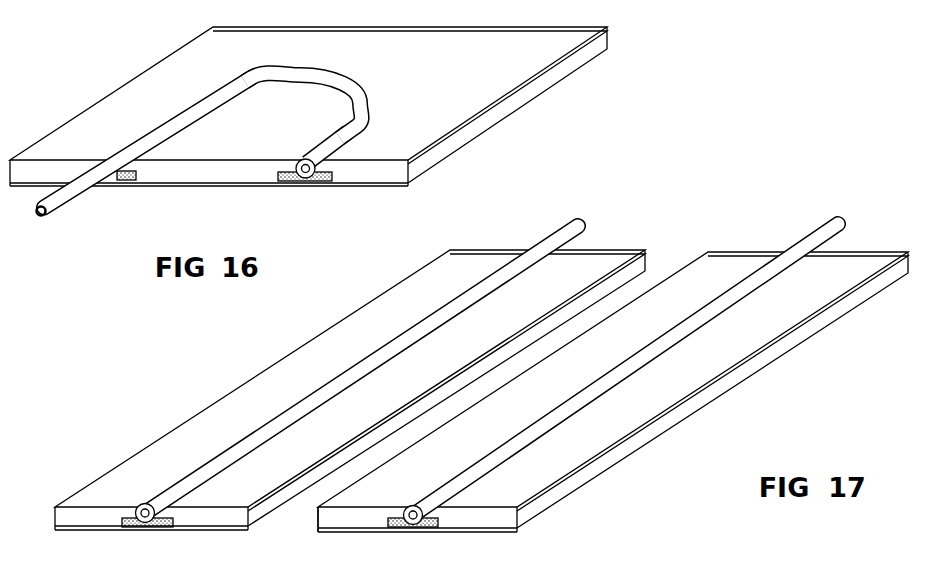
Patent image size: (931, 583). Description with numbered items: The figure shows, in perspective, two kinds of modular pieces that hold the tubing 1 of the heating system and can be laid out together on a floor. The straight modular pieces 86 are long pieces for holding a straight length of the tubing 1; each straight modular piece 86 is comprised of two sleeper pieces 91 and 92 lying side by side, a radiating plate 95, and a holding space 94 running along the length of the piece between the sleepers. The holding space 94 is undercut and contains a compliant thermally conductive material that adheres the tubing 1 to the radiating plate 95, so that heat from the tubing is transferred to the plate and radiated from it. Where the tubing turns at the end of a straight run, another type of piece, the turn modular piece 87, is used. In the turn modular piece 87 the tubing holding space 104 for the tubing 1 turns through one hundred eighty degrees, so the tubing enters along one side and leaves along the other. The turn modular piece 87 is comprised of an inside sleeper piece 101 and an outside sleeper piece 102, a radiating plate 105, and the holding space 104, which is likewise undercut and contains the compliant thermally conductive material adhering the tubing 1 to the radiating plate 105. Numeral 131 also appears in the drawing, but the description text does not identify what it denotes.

In FIG. 16, the tubing 1 is at (77, 200).
In FIG. 17, the tubing 1 is at (539, 239).
In FIG. 16, the turn modular piece 87 is at (120, 60).
In FIG. 16, the outside sleeper piece 102 is at (508, 72).
In FIG. 16, the holding space 104 is at (379, 87).
In FIG. 16, the inside sleeper piece 101 is at (209, 197).
In FIG. 16, the radiating plate 105 is at (253, 187).
In FIG. 17, the straight modular piece 86 is at (621, 230).
In FIG. 17, the holding space 94 is at (489, 439).
In FIG. 17, the sleeper piece 91 is at (318, 519).
In FIG. 17, the sleeper piece 92 is at (532, 520).
In FIG. 17, the radiating plate 95 is at (433, 530).
In FIG. 17, the panel 131 is at (717, 578).